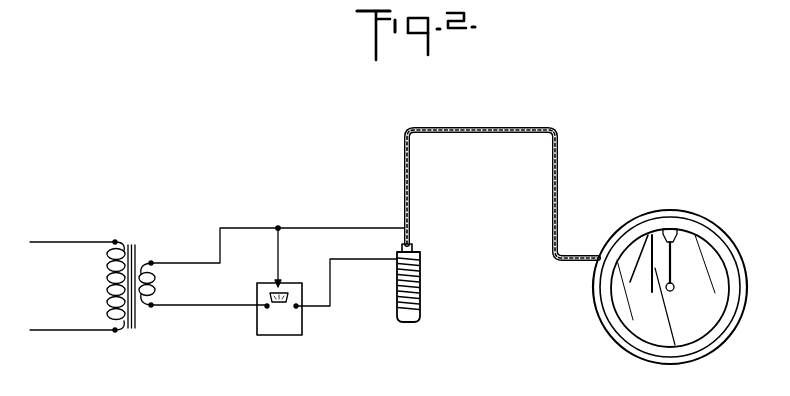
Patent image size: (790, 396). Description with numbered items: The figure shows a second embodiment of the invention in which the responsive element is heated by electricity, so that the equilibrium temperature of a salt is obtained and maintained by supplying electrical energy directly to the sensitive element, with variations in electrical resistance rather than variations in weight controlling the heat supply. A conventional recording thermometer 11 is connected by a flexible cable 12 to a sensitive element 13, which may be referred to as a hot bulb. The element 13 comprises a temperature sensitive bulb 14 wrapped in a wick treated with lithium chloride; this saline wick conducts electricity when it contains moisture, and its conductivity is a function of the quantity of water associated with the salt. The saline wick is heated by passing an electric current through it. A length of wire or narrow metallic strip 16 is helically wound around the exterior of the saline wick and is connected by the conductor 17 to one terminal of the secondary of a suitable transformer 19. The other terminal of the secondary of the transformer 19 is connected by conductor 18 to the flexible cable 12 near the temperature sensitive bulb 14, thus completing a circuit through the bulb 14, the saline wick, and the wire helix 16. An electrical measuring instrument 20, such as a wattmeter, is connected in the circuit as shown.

The recording thermometer 11 is at (698, 221).
The flexible cable 12 is at (500, 129).
The sensitive element 13 is at (450, 268).
The temperature sensitive bulb 14 is at (413, 244).
The wire helix 16 is at (420, 293).
The conductor 17 is at (352, 262).
The conductor 18 is at (265, 226).
The transformer 19 is at (134, 238).
The electrical measuring instrument 20 is at (297, 335).